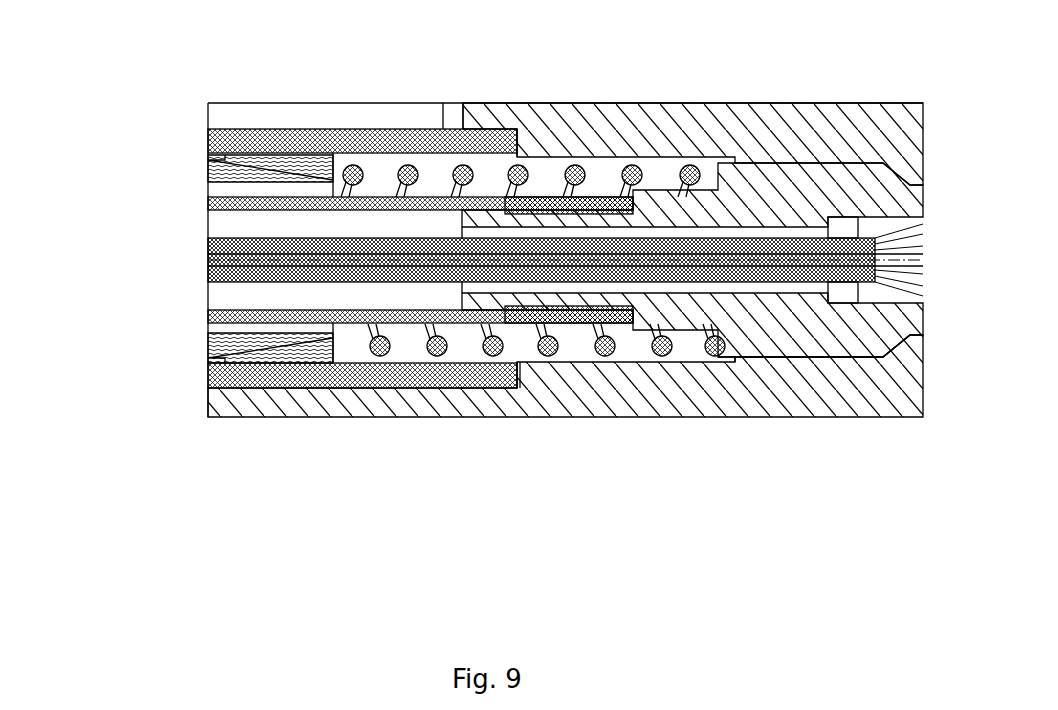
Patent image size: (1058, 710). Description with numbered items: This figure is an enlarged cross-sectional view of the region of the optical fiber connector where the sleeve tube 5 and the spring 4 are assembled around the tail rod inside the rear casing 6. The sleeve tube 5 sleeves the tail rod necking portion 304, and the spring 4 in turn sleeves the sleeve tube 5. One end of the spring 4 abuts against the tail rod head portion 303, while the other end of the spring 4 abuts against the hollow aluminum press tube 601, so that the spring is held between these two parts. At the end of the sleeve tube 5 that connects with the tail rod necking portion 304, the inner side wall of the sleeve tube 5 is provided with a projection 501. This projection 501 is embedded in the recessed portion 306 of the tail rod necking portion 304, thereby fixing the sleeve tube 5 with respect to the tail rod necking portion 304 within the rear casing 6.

The rear casing 6 is at (228, 388).
The hollow aluminum press tube 601 is at (282, 163).
The recessed portion 306 is at (532, 202).
The sleeve tube 5 is at (392, 352).
The projection 501 is at (529, 322).
The spring 4 is at (607, 368).
The tail rod necking portion 304 is at (690, 330).
The tail rod head portion 303 is at (760, 362).